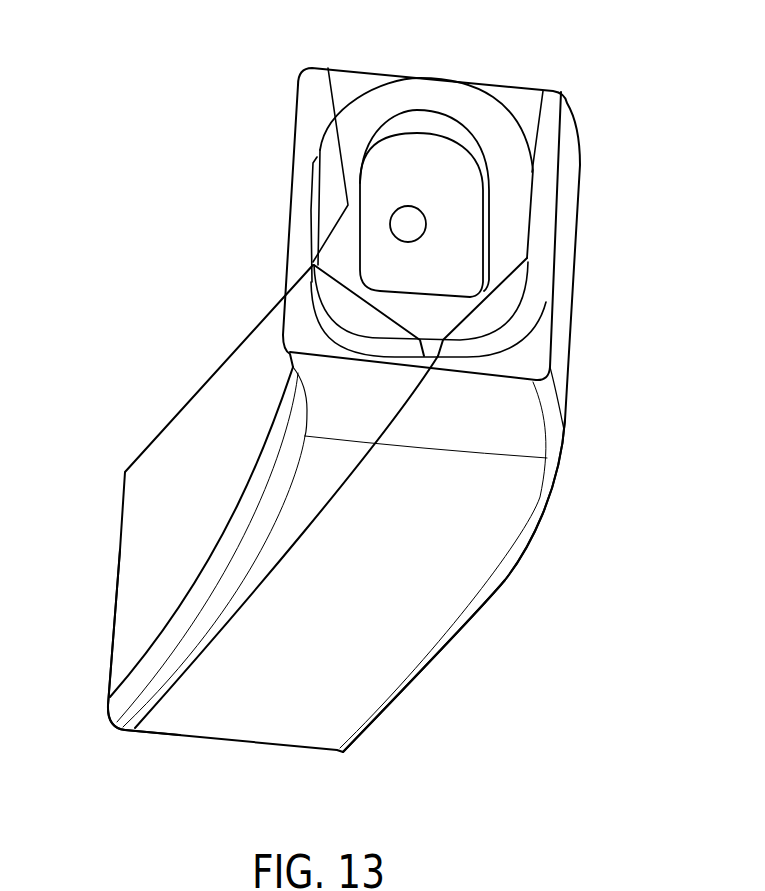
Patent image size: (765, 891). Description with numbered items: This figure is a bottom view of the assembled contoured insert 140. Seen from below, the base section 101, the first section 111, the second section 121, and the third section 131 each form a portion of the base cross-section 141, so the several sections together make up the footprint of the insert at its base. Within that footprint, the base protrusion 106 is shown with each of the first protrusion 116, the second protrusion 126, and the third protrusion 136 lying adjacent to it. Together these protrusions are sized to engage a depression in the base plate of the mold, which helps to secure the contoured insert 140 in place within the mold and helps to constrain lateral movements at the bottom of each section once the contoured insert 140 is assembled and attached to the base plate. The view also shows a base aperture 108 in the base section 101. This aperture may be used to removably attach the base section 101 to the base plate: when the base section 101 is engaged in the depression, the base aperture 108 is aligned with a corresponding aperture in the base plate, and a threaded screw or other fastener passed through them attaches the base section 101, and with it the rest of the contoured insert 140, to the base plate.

The contoured insert 140 is at (140, 86).
The base section 101 is at (520, 100).
The base protrusion 106 is at (370, 97).
The base aperture 108 is at (404, 212).
The third protrusion 136 is at (332, 139).
The base cross-section 141 is at (290, 198).
The first protrusion 116 is at (337, 298).
The second protrusion 126 is at (510, 289).
The third section 131 is at (175, 437).
The first section 111 is at (112, 713).
The second section 121 is at (432, 632).